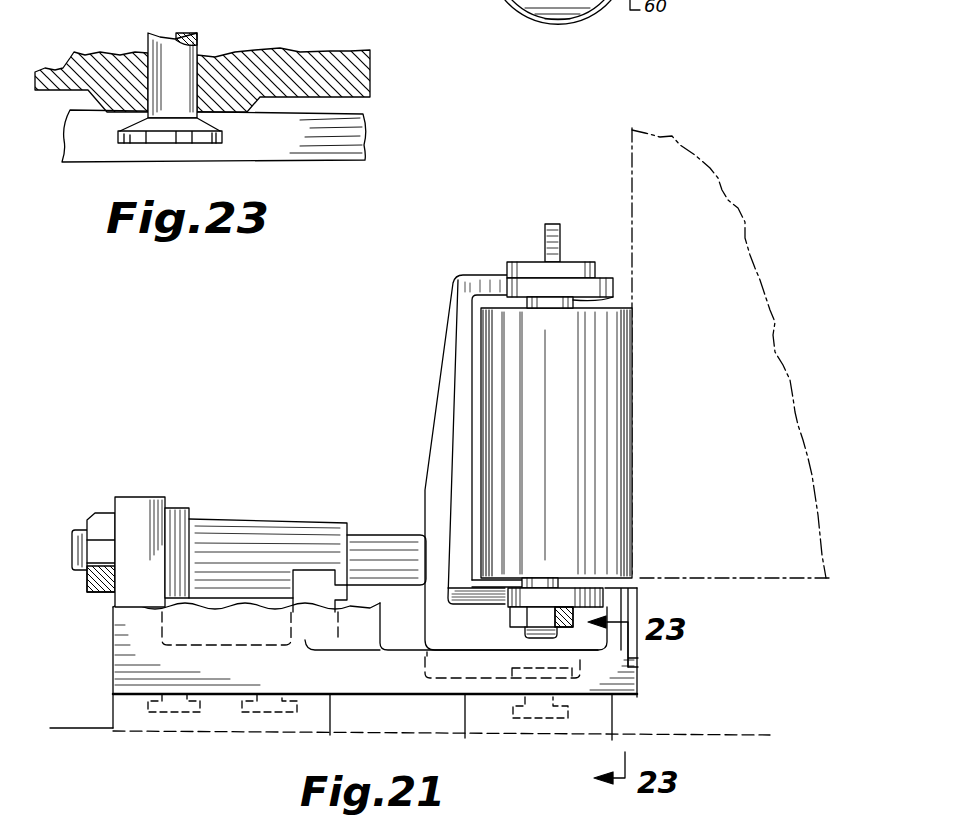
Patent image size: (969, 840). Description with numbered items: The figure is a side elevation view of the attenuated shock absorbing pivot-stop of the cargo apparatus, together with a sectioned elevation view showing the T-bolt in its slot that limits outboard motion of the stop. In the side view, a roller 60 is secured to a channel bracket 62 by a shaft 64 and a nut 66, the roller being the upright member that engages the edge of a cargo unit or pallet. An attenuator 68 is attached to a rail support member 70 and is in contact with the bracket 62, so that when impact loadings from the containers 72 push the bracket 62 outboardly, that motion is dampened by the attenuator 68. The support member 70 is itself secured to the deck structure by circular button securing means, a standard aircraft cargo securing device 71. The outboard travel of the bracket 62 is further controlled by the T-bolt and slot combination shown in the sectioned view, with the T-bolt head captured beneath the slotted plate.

The roller 60 is at (567, 427).
The channel bracket 62 is at (470, 276).
The shaft 64 is at (575, 306).
The nut 66 is at (506, 620).
The attenuator 68 is at (295, 522).
The rail support member 70 is at (113, 647).
The standard aircraft cargo securing device 71 is at (165, 712).
The container 72 is at (776, 322).